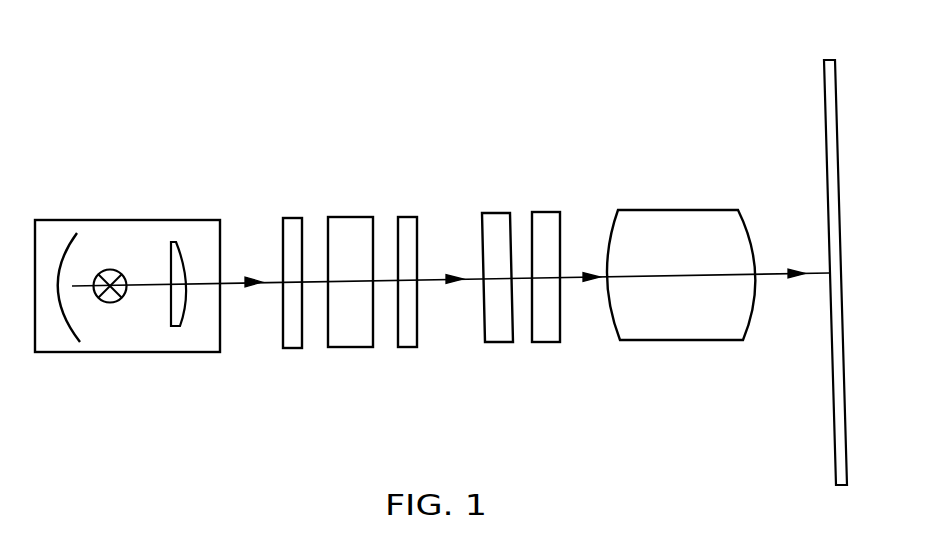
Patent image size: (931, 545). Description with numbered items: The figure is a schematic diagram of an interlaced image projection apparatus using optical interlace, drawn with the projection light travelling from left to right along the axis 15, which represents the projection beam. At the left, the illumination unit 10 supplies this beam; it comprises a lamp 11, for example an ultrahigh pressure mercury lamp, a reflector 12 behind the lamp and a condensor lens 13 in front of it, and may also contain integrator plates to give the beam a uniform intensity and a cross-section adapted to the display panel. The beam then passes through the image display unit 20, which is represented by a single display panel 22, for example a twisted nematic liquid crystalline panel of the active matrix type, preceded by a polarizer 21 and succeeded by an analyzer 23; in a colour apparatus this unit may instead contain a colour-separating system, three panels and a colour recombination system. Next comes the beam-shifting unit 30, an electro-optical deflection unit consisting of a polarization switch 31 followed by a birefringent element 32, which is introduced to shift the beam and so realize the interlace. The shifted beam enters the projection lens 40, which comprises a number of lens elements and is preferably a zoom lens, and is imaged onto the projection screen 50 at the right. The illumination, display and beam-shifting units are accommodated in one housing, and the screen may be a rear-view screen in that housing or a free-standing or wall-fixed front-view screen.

The illumination unit 10 is at (148, 186).
The lamp 11 is at (110, 303).
The reflector 12 is at (80, 341).
The condensor lens 13 is at (178, 327).
The axis 15 is at (253, 288).
The image display unit 20 is at (363, 185).
The polarizer 21 is at (293, 344).
The display panel 22 is at (357, 338).
The analyzer 23 is at (407, 341).
The beam-shifting unit 30 is at (528, 180).
The polarization switch 31 is at (502, 338).
The birefringent element 32 is at (547, 336).
The projection lens 40 is at (685, 178).
The projection screen 50 is at (800, 89).